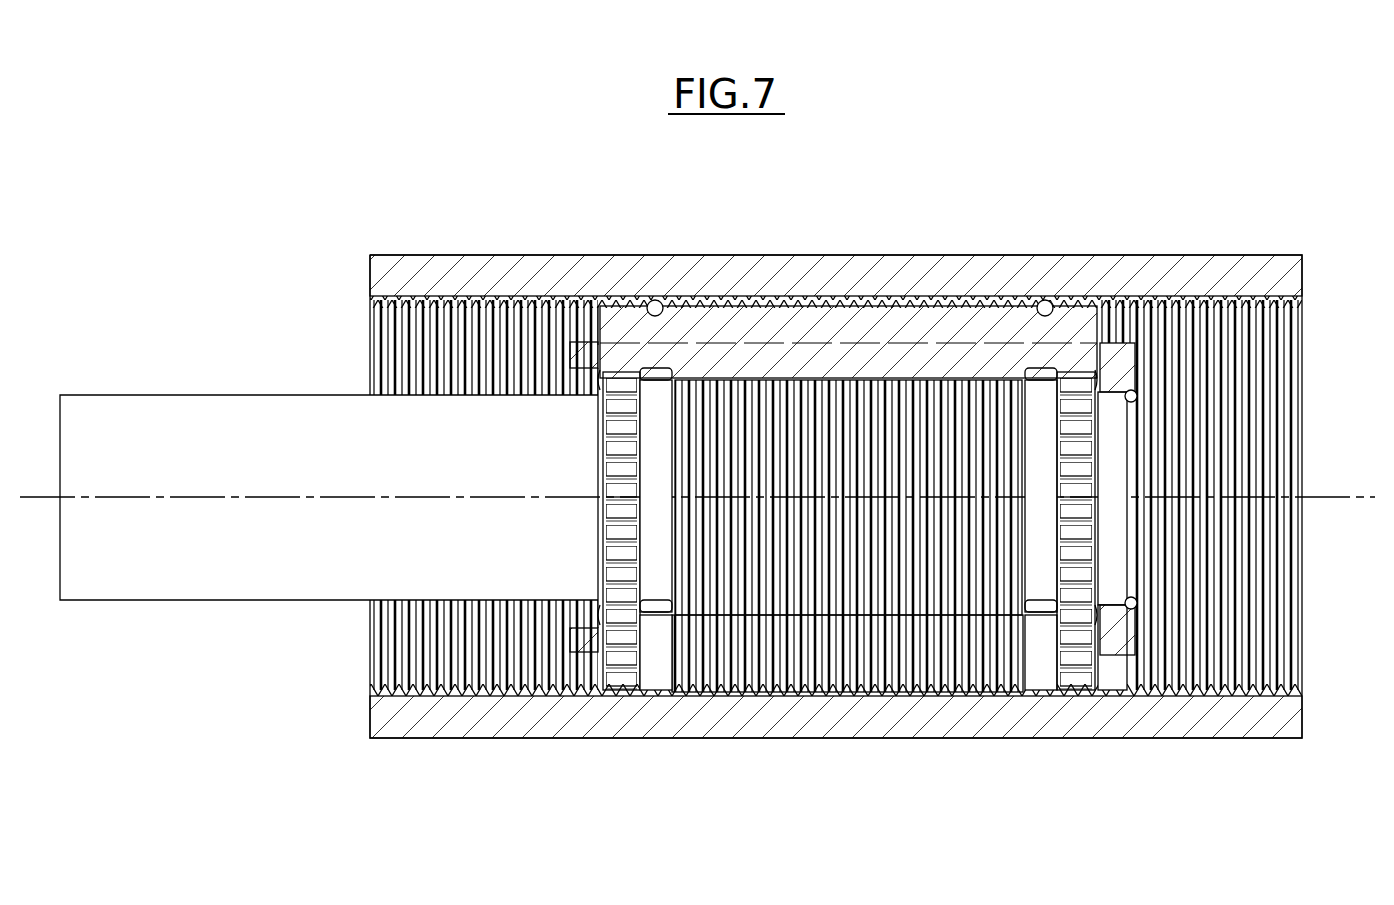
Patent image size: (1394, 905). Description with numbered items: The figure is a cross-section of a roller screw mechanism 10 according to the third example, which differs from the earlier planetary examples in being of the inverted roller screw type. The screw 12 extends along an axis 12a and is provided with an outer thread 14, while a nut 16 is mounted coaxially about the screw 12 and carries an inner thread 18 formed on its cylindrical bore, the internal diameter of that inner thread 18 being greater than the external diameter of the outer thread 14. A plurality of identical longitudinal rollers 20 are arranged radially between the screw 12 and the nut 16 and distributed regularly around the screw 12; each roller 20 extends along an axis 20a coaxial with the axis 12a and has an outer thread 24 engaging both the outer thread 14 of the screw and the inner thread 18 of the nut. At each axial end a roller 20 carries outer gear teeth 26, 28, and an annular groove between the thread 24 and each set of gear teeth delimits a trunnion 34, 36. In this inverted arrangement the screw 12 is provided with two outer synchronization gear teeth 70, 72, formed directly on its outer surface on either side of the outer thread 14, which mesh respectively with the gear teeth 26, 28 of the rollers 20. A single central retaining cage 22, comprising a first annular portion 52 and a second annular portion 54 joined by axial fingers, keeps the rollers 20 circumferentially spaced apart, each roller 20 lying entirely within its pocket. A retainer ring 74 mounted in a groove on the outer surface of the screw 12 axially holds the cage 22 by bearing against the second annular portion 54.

The roller screw mechanism 10 is at (699, 469).
The screw 12 is at (185, 403).
The axis 12a is at (1357, 495).
The outer thread 14 is at (808, 650).
The nut 16 is at (1113, 247).
The inner thread 18 is at (1127, 316).
The rollers 20 is at (824, 312).
The roller axis 20a is at (957, 335).
The central retaining cage 22 is at (588, 325).
The outer thread of roller 24 is at (938, 680).
The outer gear teeth 26 is at (620, 650).
The outer gear teeth 28 is at (1080, 670).
The trunnion 34 is at (655, 630).
The trunnion 36 is at (1045, 670).
The first annular portion 52 is at (590, 655).
The second annular portion 54 is at (1122, 660).
The synchronization gear teeth 70 is at (617, 540).
The synchronization gear teeth 72 is at (1092, 545).
The retainer ring 74 is at (1137, 397).